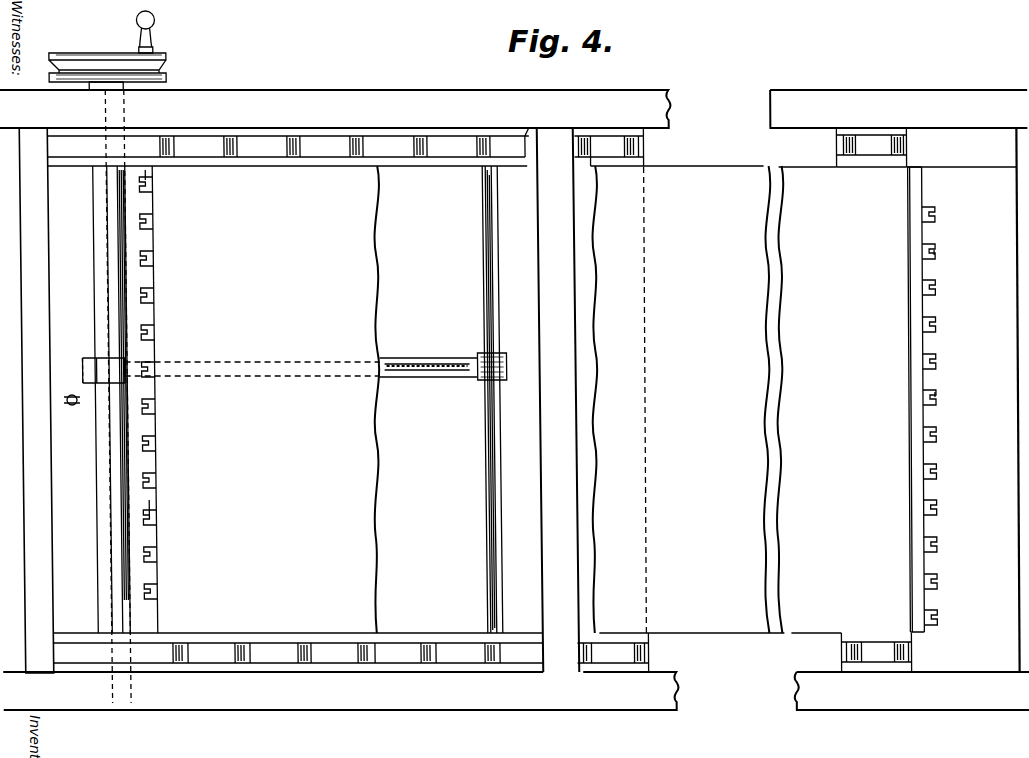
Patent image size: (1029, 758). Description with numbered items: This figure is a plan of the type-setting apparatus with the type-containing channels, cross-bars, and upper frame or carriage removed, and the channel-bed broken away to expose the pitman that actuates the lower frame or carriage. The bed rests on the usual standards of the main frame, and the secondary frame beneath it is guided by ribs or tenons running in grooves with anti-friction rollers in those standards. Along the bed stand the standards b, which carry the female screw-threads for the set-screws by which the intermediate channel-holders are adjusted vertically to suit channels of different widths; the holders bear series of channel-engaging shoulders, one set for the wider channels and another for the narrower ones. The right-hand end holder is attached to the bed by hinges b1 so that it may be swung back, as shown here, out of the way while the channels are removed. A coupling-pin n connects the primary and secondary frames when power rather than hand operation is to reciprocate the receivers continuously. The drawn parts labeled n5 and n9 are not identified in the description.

The coupling-pin n is at (40, 424).
The bearing block n5 is at (623, 651).
The bearing block n9 is at (845, 148).
The standards b is at (432, 382).
The hinges b1 is at (912, 570).